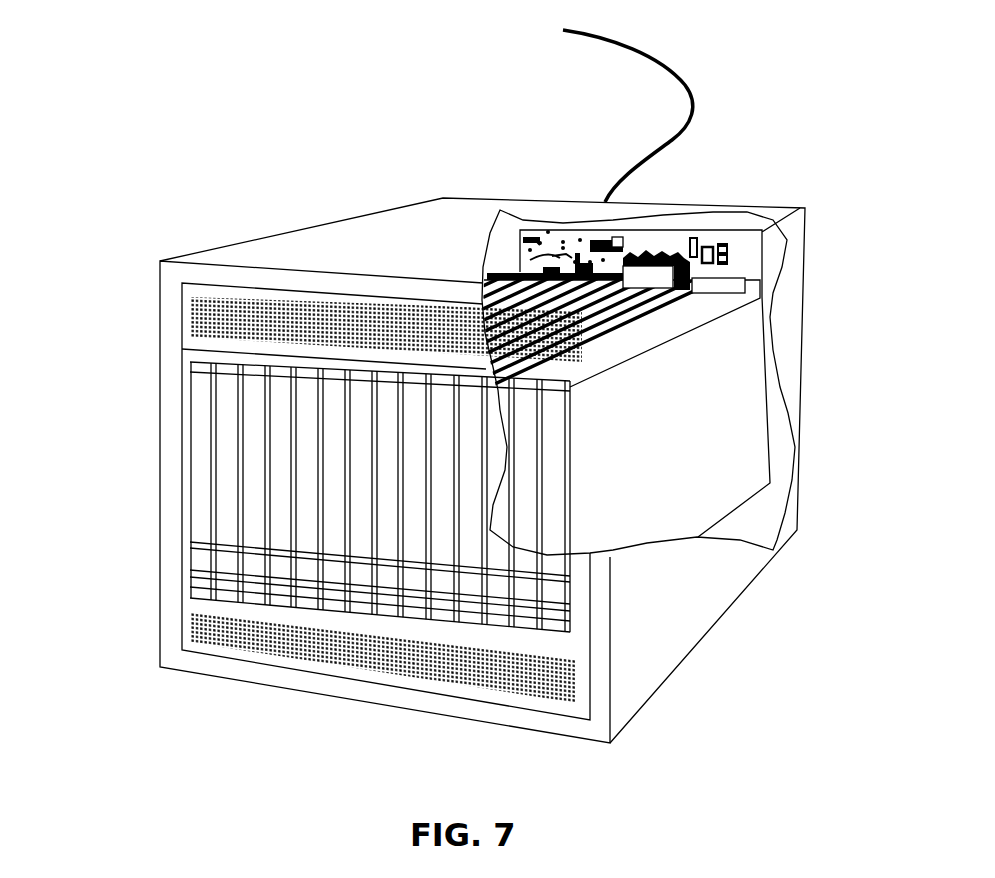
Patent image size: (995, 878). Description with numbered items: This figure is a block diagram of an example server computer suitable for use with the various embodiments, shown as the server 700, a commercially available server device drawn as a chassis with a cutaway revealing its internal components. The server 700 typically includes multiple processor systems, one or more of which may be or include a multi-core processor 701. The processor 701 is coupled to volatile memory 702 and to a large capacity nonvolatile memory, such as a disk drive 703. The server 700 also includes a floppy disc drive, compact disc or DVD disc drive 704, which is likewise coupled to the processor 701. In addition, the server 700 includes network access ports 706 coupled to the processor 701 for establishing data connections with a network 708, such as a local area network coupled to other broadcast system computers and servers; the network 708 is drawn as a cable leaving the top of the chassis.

The server 700 is at (358, 217).
The multi-core processor 701 is at (651, 280).
The volatile memory 702 is at (740, 287).
The disk drive 703 is at (252, 430).
The disc drive 704 is at (223, 467).
The network access ports 706 is at (520, 277).
The network 708 is at (690, 90).